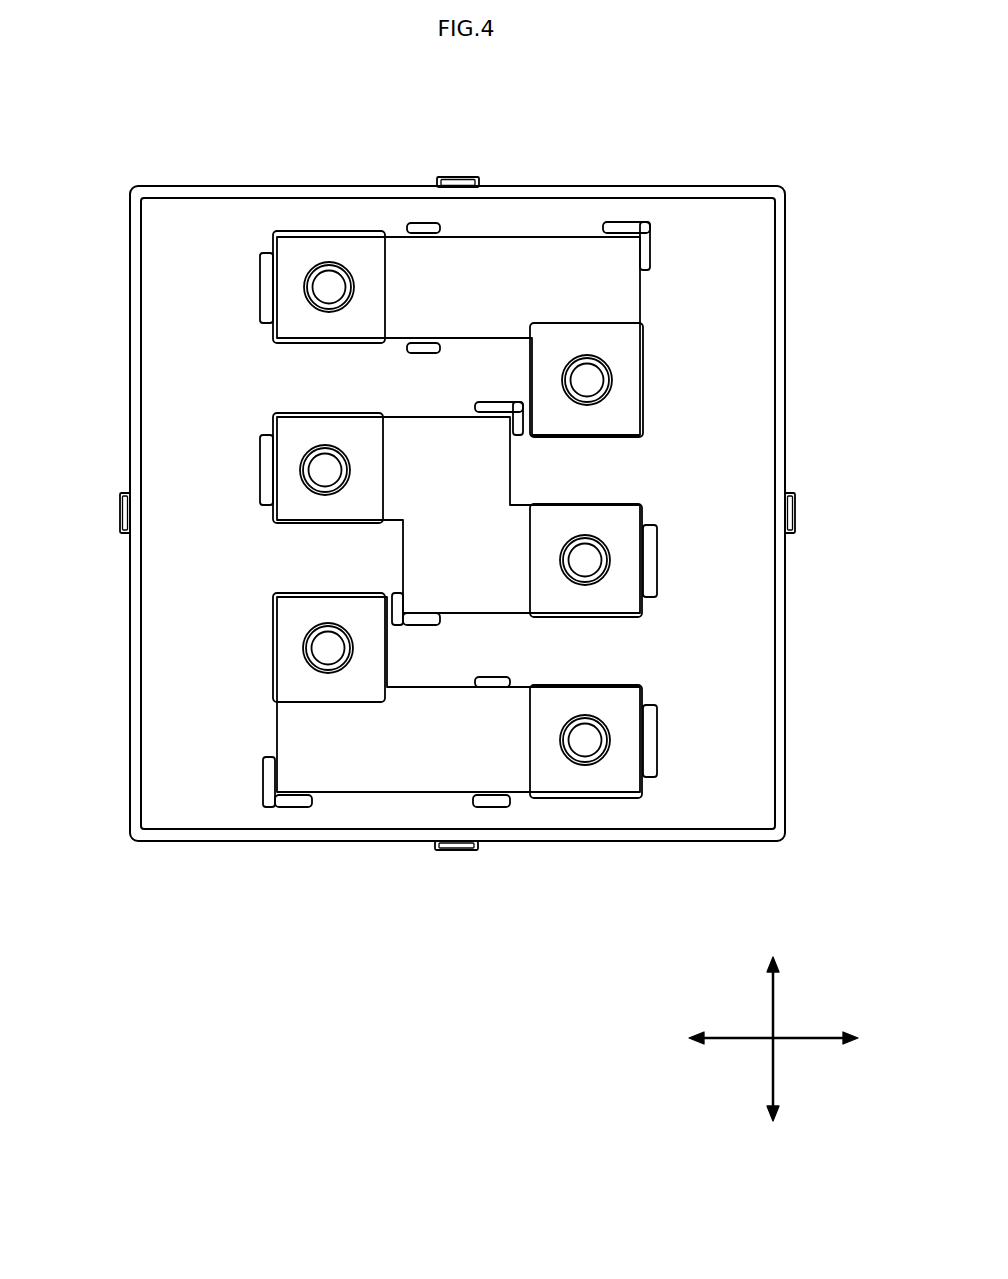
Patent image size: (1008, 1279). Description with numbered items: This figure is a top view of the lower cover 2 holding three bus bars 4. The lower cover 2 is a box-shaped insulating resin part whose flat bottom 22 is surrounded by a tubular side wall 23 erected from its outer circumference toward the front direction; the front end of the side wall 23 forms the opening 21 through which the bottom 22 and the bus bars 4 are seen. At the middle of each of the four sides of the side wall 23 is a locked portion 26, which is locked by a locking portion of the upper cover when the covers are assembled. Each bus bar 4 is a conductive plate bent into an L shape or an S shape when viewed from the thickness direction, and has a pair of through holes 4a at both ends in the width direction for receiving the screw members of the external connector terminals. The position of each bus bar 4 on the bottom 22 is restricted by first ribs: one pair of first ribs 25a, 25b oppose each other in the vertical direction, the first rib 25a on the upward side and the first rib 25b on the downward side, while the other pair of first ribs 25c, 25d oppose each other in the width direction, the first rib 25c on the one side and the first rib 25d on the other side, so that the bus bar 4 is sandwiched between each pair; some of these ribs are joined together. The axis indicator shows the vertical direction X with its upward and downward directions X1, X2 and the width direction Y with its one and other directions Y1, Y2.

The lower cover 2 is at (215, 123).
The bus bar 4 is at (540, 255).
The through hole 4a is at (329, 275).
The opening 21 is at (780, 253).
The bottom 22 is at (738, 392).
The side wall 23 is at (786, 325).
The first rib 25a is at (425, 222).
The first rib 25b is at (425, 353).
The first rib 25c is at (265, 288).
The first rib 25d is at (648, 248).
The locked portion 26 is at (457, 177).
The X axis direction X is at (775, 996).
The Y axis direction Y is at (740, 1035).
The X1 direction X1 is at (772, 943).
The X2 direction X2 is at (772, 1136).
The Y1 direction Y1 is at (672, 1039).
The Y2 direction Y2 is at (874, 1039).